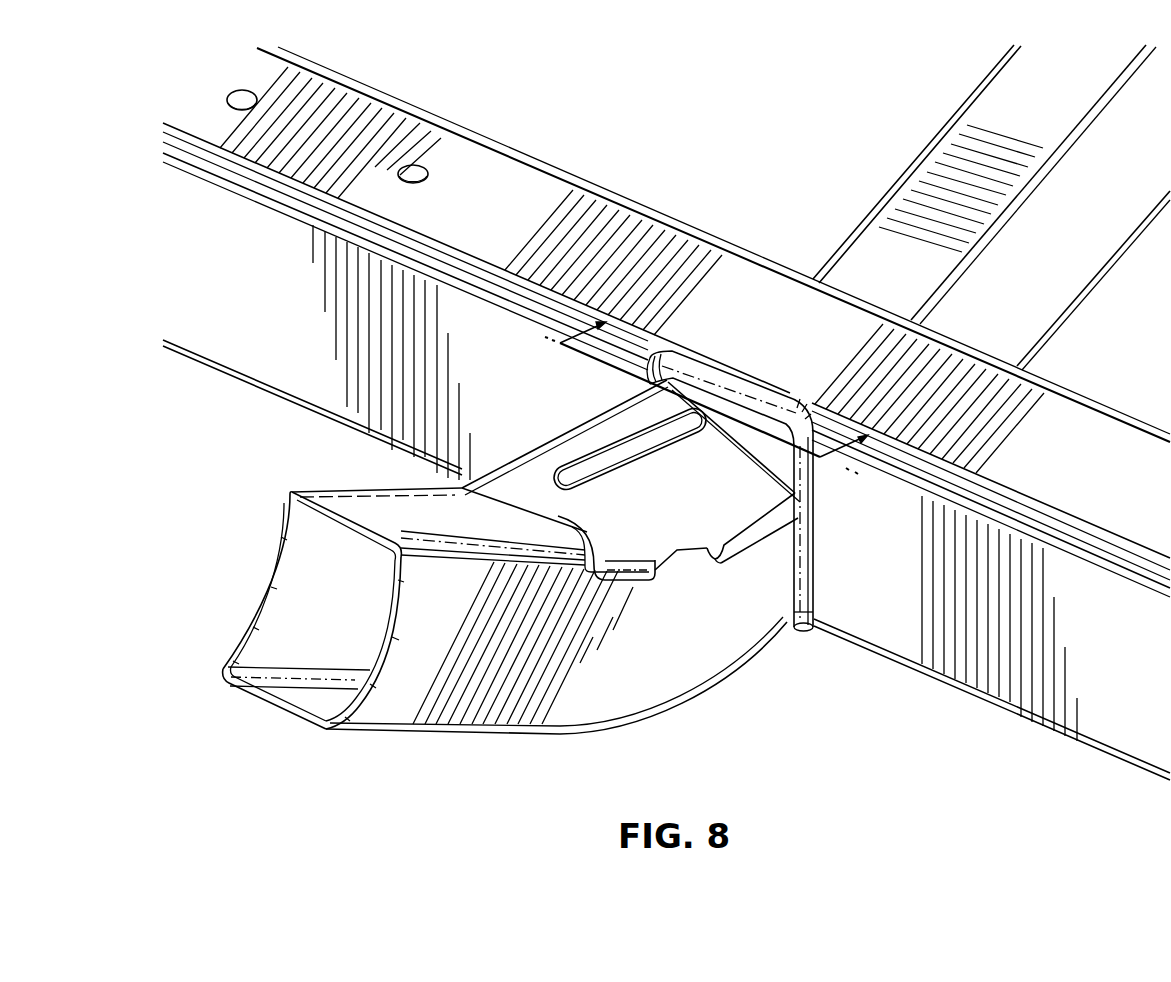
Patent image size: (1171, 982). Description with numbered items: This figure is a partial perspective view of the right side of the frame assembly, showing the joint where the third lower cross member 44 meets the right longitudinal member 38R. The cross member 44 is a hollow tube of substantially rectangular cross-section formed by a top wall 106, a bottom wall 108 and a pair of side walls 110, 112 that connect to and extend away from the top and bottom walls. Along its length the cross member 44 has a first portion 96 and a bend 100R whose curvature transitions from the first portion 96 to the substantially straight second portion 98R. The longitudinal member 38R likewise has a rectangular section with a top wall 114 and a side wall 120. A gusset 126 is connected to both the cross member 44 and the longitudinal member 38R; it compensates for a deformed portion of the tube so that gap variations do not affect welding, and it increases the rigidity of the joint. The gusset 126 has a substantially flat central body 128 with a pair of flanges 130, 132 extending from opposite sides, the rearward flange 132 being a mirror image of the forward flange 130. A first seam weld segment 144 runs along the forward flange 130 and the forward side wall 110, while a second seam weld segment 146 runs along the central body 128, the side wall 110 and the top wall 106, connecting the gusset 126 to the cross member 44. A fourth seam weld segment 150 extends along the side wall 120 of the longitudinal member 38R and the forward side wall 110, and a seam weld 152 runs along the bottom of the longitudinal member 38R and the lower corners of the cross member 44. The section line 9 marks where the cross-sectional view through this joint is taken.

The third lower cross member 44 is at (967, 102).
The top wall 114 is at (557, 177).
The first portion 96 is at (1083, 290).
The side wall 120 is at (262, 363).
The longitudinal member 38R is at (935, 688).
The second portion 98R is at (482, 648).
The bend 100R is at (693, 698).
The top wall 106 is at (347, 523).
The bottom wall 108 is at (275, 715).
The side wall 110 is at (380, 647).
The side wall 112 is at (260, 605).
The gusset 126 is at (613, 507).
The central body 128 is at (577, 456).
The forward flange 130 is at (690, 537).
The rearward flange 132 is at (593, 471).
The first seam weld segment 144 is at (750, 548).
The second seam weld segment 146 is at (545, 520).
The fourth seam weld segment 150 is at (733, 380).
The seam weld 152 is at (812, 560).
The section line 9- 9 is at (704, 409).